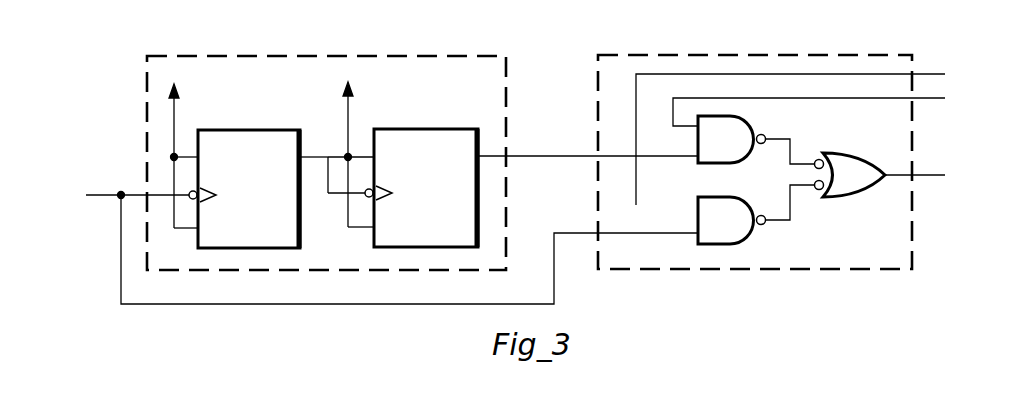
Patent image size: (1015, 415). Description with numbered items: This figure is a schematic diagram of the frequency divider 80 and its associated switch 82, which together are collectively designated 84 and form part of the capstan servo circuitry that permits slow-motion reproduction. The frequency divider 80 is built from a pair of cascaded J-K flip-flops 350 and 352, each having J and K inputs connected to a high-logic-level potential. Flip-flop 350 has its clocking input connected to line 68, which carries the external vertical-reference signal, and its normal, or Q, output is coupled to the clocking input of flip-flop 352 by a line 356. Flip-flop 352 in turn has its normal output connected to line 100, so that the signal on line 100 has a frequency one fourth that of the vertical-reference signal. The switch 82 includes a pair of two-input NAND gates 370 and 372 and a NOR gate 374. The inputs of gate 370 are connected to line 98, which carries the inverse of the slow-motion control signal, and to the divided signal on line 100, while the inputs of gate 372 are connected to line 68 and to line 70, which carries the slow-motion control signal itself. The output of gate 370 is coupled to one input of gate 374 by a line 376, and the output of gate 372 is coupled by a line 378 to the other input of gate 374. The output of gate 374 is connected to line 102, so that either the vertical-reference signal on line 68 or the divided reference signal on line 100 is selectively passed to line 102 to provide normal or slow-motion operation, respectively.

The line 68 is at (233, 306).
The line 70 is at (918, 72).
The frequency divider 80 is at (315, 270).
The switch 82 is at (717, 270).
The combination of frequency divider and associated switch 84 is at (790, 287).
The line 98 is at (918, 100).
The line 100 is at (534, 158).
The line 102 is at (918, 177).
The J-K flip-flop 350 is at (289, 130).
The J-K flip-flop 352 is at (409, 128).
The line 356 is at (325, 158).
The two-input NAND gate 370 is at (742, 152).
The two-input NAND gate 372 is at (742, 233).
The NOR gate 374 is at (866, 186).
The line 376 is at (793, 153).
The line 378 is at (794, 208).